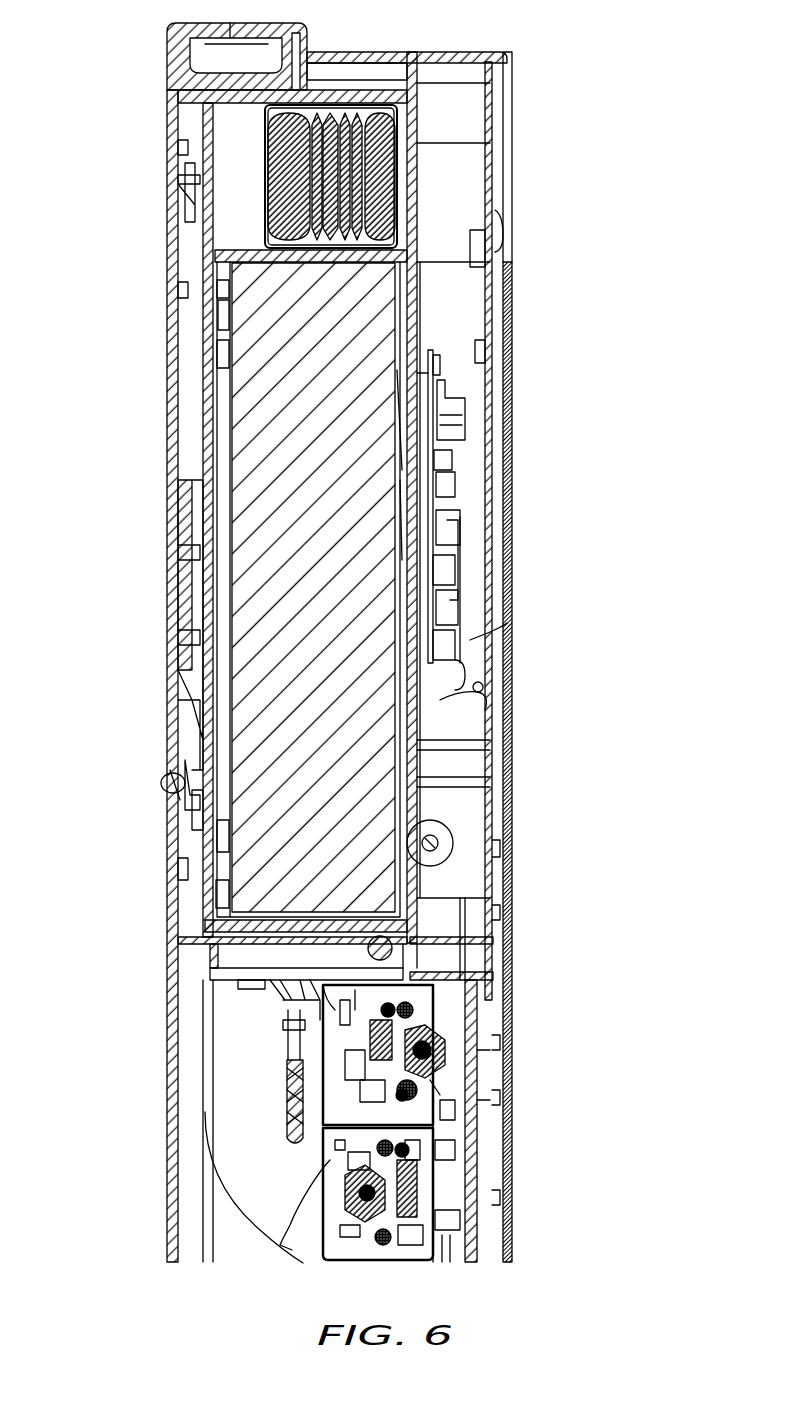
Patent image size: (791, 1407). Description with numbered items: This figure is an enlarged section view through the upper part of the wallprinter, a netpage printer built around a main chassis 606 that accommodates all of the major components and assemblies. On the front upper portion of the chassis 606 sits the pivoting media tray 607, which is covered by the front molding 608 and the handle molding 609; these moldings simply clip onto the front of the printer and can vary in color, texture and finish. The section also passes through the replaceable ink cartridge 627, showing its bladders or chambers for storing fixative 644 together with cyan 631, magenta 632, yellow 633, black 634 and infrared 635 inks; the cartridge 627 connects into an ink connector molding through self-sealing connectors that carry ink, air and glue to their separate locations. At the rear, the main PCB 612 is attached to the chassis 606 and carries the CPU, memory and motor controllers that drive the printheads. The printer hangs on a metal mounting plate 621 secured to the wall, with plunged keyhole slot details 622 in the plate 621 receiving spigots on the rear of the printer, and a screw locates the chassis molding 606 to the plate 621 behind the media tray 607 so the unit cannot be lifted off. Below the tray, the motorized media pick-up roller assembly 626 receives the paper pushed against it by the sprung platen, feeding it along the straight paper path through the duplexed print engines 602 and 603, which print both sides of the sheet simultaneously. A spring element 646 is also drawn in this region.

The Memjet print engine 602 is at (470, 992).
The Memjet print engine 603 is at (345, 1162).
The main chassis 606 is at (418, 778).
The pivoting media tray 607 is at (205, 255).
The front molding 608 is at (172, 142).
The handle molding 609 is at (167, 52).
The main PCB 612 is at (447, 478).
The metal mounting plate 621 is at (513, 293).
The plunged keyhole slot details 622 is at (505, 335).
The motorized media pick-up roller assembly 626 is at (462, 843).
The ink cartridge 627 is at (190, 210).
The cyan ink 631 is at (367, 206).
The magenta ink 632 is at (353, 184).
The yellow ink 633 is at (340, 154).
The black ink 634 is at (323, 124).
The infrared ink 635 is at (277, 126).
The fixative 644 is at (392, 229).
The spring 646 is at (297, 1060).